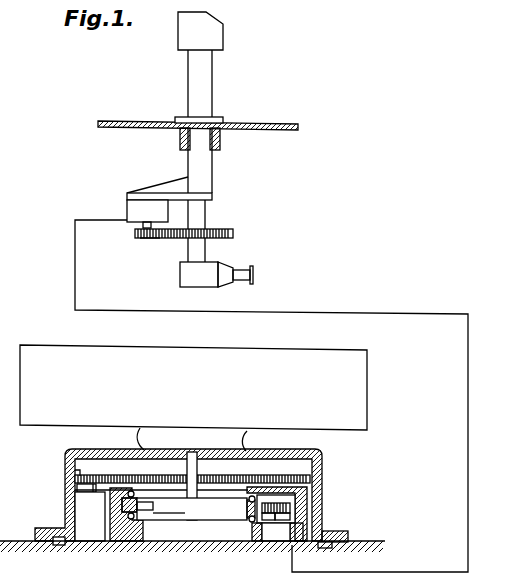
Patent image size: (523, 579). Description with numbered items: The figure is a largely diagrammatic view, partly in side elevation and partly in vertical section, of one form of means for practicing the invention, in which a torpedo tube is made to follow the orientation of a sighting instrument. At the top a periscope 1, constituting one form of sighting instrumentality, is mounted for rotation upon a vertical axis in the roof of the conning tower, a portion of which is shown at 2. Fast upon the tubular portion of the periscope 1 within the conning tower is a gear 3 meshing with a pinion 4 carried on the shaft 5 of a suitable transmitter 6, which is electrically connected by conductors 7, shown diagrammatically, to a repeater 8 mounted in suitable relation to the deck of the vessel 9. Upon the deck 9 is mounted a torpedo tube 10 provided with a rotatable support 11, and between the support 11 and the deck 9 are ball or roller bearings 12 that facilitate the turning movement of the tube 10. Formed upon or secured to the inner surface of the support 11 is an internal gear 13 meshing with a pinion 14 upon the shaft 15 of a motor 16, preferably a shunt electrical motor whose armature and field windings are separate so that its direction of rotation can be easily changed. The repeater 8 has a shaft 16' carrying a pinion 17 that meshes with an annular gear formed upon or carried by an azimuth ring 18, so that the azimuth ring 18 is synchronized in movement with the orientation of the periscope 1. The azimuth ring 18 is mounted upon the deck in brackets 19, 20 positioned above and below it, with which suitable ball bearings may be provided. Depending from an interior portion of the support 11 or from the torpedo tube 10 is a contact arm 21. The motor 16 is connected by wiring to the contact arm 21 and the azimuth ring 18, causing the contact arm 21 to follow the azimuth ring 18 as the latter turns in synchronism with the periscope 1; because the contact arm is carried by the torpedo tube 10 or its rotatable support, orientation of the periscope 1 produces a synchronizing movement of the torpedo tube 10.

The periscope 1 is at (205, 73).
The conning tower 2 is at (250, 124).
The gear 3 is at (233, 234).
The pinion 4 is at (149, 239).
The shaft 5 is at (141, 226).
The transmitter 6 is at (127, 203).
The conductors 7 is at (271, 314).
The repeater 8 is at (275, 537).
The deck 9 is at (366, 548).
The torpedo tube 10 is at (240, 356).
The rotatable support 11 is at (319, 467).
The ball or roller bearings 12 is at (330, 536).
The internal gear 13 is at (258, 481).
The pinion 14 is at (77, 473).
The shaft 15 is at (67, 487).
The motor 16 is at (85, 533).
The shaft 16' is at (307, 512).
The pinion 17 is at (291, 503).
The azimuth ring 18 is at (220, 504).
The bracket 19 is at (152, 485).
The bracket 20 is at (120, 535).
The contact arm 21 is at (197, 468).